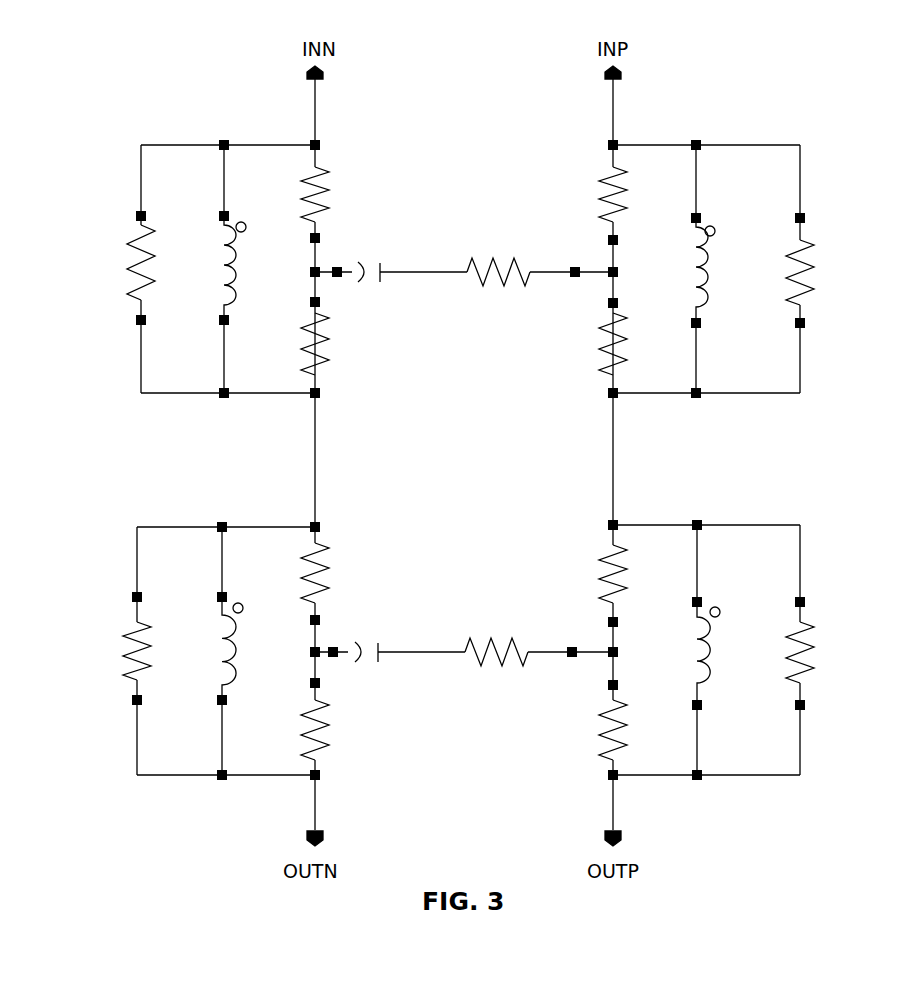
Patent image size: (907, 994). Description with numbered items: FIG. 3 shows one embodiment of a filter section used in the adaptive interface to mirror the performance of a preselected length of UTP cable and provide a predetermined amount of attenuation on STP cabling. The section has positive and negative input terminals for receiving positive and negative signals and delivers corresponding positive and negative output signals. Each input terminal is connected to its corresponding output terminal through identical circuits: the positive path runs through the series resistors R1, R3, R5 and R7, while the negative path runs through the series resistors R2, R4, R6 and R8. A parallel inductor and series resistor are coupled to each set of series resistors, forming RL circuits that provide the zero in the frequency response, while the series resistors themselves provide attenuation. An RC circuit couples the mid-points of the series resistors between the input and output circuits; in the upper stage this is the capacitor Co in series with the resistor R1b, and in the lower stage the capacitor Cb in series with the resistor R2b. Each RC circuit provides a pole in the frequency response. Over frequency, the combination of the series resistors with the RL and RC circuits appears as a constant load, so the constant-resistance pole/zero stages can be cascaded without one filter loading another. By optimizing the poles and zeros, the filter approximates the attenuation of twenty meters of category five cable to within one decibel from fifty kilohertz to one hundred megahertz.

The series resistor R2 is at (346, 188).
The series resistor R4 is at (347, 342).
The series resistor R1 is at (643, 188).
The series resistor R3 is at (641, 342).
The capacitor Co c=27.8p Co is at (409, 248).
The resistor R1b r=1.333K R1b is at (530, 305).
The series resistor R6 is at (345, 567).
The series resistor R8 is at (348, 726).
The series resistor R5 is at (643, 568).
The series resistor R7 is at (643, 727).
The capacitor Cb c=3.4p Cb is at (401, 626).
The resistor R2b r=1.333 R2b is at (520, 685).